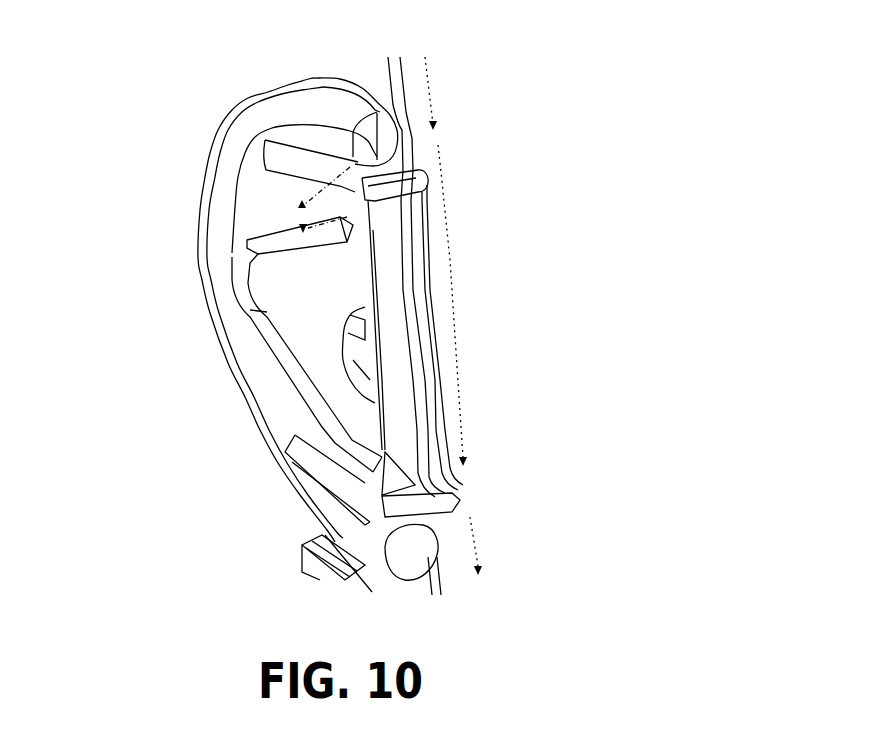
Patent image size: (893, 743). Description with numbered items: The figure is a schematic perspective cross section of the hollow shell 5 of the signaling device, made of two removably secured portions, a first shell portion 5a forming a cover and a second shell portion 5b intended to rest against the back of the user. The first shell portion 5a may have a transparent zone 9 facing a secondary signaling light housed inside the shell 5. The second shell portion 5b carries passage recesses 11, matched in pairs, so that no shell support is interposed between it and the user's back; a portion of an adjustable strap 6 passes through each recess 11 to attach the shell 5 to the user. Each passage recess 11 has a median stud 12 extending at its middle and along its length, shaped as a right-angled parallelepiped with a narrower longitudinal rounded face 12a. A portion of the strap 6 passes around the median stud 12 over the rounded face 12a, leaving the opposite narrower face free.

The hollow shell 5 is at (448, 302).
The first shell portion 5a is at (333, 120).
The second shell portion 5b is at (377, 102).
The adjustable strap 6 is at (398, 75).
The transparent zone 9 is at (320, 302).
The passage recess 11 is at (360, 161).
The median stud 12 is at (433, 169).
The rounded face 12a is at (360, 191).